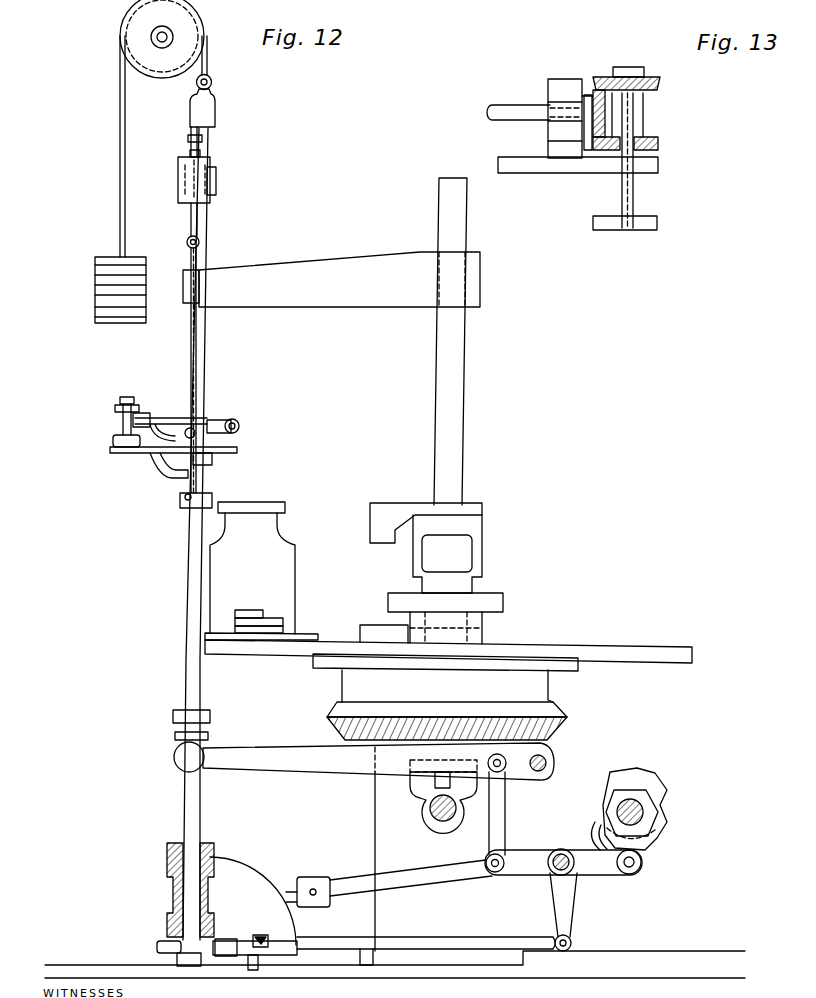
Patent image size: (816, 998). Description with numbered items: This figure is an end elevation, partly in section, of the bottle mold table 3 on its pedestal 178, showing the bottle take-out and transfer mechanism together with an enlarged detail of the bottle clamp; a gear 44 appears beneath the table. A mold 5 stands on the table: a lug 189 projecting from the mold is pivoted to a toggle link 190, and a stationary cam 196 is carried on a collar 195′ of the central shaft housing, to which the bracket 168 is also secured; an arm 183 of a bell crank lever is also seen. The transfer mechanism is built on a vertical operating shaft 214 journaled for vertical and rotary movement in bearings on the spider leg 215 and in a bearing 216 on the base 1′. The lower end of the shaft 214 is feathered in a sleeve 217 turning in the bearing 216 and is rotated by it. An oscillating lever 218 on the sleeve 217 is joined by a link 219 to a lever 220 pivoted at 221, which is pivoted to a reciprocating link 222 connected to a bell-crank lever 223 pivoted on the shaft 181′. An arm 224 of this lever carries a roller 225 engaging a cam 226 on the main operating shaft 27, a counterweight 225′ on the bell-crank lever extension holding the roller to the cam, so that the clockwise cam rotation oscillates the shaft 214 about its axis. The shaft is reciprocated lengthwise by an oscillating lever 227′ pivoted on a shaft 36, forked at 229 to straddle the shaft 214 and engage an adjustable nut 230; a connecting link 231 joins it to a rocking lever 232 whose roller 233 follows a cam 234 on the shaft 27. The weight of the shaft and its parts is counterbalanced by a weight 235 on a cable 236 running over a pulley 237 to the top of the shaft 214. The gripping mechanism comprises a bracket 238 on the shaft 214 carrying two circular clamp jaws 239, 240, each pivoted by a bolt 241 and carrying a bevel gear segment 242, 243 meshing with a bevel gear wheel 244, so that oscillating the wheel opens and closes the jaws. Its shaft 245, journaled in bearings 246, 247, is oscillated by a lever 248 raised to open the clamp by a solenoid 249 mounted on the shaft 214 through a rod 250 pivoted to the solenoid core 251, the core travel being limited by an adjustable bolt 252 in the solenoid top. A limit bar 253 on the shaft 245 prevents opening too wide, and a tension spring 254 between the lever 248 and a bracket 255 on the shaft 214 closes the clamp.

In FIG. 12, the pulley 237 is at (162, 60).
In FIG. 12, the cable 236 is at (123, 213).
In FIG. 12, the weight 235 is at (108, 298).
In FIG. 12, the adjustable bolt 252 is at (203, 141).
In FIG. 12, the solenoid 249 is at (200, 188).
In FIG. 12, the solenoid core 251 is at (196, 230).
In FIG. 12, the rod 250 is at (193, 342).
In FIG. 12, the vertical operating shaft 214 is at (188, 660).
In FIG. 12, the spider leg 215 is at (367, 295).
In FIG. 12, the bottle mold table pedestal 178 is at (452, 375).
In FIG. 12, the bracket 168 is at (387, 513).
In FIG. 12, the lug 189 is at (467, 529).
In FIG. 12, the stationary cam 196 is at (490, 607).
In FIG. 12, the block 195′ is at (369, 630).
In FIG. 12, the table 3 is at (285, 654).
In FIG. 12, the mold 5 is at (273, 567).
In FIG. 12, the arm 183 is at (258, 610).
In FIG. 12, the toggle link 190 is at (278, 617).
In FIG. 12, the adjustable nut 230 is at (173, 726).
In FIG. 12, the forked end 229 is at (204, 770).
In FIG. 12, the lever 227′ is at (338, 762).
In FIG. 12, the pin 36 is at (428, 816).
In FIG. 12, the gear 44 is at (327, 715).
In FIG. 12, the bell-crank lever 223 is at (547, 761).
In FIG. 12, the connecting link 231 is at (500, 815).
In FIG. 12, the rocking lever 232 is at (535, 876).
In FIG. 12, the shaft 181′ is at (582, 876).
In FIG. 12, the roller 225 is at (642, 857).
In FIG. 12, the roller 233 is at (641, 870).
In FIG. 12, the cam 226 is at (640, 780).
In FIG. 12, the main operating shaft 27 is at (647, 810).
In FIG. 12, the cam 234 is at (662, 828).
In FIG. 12, the arm 224 is at (596, 842).
In FIG. 12, the block 225′ is at (310, 881).
In FIG. 12, the bearing 216 is at (240, 877).
In FIG. 12, the sleeve 217 is at (167, 887).
In FIG. 12, the oscillating lever 218 is at (157, 946).
In FIG. 12, the link 219 is at (216, 941).
In FIG. 12, the pivot 221 is at (270, 938).
In FIG. 12, the lever 220 is at (253, 958).
In FIG. 12, the reciprocating link 222 is at (428, 947).
In FIG. 12, the base 1′ is at (224, 974).
In FIG. 12, the bracket 238 is at (147, 453).
In FIG. 12, the bolt 241 is at (125, 397).
In FIG. 13, the bolt 241 is at (637, 75).
In FIG. 12, the bevel gear wheel 244 is at (117, 403).
In FIG. 13, the bevel gear wheel 244 is at (587, 95).
In FIG. 12, the bevel gear shaft 245 is at (115, 409).
In FIG. 13, the bevel gear shaft 245 is at (521, 106).
In FIG. 12, the bearing 246 is at (142, 413).
In FIG. 13, the bearing 246 is at (558, 82).
In FIG. 12, the limit bar 253 is at (172, 420).
In FIG. 12, the bearing 247 is at (208, 425).
In FIG. 12, the lever 248 is at (221, 438).
In FIG. 12, the bevel gear segment 242 is at (113, 439).
In FIG. 13, the bevel gear segment 242 is at (656, 141).
In FIG. 12, the tension spring 254 is at (184, 497).
In FIG. 12, the bracket 255 is at (188, 509).
In FIG. 13, the bevel gear segment 243 is at (656, 89).
In FIG. 13, the clamp jaw 239 is at (630, 220).
In FIG. 13, the clamp jaw 240 is at (617, 216).